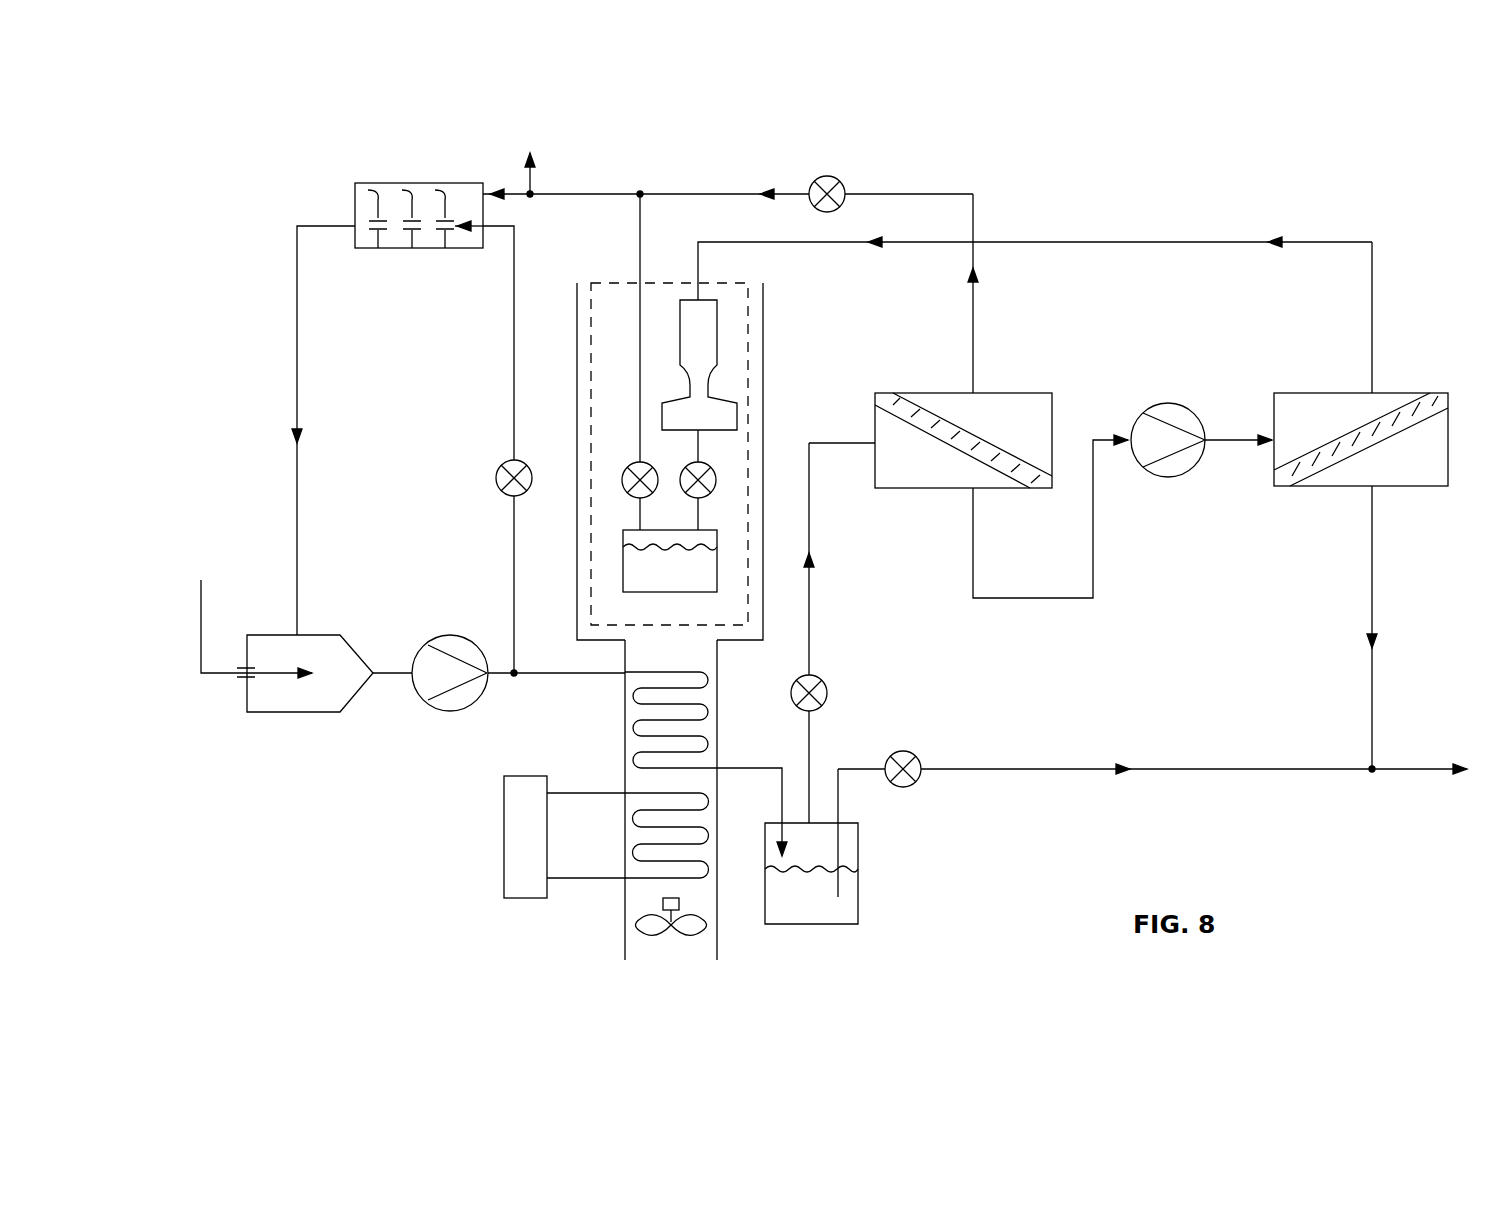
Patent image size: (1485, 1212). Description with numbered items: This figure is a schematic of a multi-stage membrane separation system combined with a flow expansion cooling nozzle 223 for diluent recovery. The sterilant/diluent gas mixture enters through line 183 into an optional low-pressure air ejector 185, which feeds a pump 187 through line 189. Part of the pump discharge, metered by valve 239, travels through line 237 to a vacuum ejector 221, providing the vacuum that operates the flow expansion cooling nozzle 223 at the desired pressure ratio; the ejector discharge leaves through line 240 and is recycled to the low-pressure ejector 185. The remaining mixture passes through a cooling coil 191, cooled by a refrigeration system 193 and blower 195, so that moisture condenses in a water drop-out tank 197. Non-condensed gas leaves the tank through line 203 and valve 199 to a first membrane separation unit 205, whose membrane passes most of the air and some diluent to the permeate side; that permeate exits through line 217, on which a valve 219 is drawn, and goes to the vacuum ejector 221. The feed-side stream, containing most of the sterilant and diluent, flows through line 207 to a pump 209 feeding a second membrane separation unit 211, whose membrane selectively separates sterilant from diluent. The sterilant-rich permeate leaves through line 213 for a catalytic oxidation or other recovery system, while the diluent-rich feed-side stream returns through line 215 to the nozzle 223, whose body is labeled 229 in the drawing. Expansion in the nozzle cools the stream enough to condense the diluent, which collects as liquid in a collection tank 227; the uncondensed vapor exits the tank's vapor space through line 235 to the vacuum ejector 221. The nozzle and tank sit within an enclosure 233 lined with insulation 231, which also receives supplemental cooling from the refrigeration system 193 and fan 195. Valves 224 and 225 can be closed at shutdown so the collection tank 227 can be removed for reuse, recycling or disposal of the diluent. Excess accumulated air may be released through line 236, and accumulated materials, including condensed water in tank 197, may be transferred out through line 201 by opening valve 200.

The line 183 is at (201, 603).
The low-pressure air ejector 185 is at (315, 712).
The pump 187 is at (445, 636).
The line 189 is at (575, 675).
The cooling coil 191 is at (633, 700).
The refrigeration system 193 is at (504, 812).
The blower 195 is at (648, 930).
The water drop-out tank 197 is at (858, 890).
The valve 199 is at (818, 678).
The valve 200 is at (910, 752).
The line 201 is at (1018, 769).
The line 203 is at (809, 507).
The first membrane separation unit 205 is at (1012, 393).
The line 207 is at (1050, 600).
The pump 209 is at (1170, 403).
The second membrane separation unit 211 is at (1410, 393).
The line 213 is at (1372, 578).
The line 215 is at (1103, 242).
The line 217 is at (973, 313).
The valve 219 is at (845, 190).
The vacuum ejector 221 is at (388, 250).
The flow expansion cooling nozzle 223 is at (680, 356).
The valve 224 is at (717, 480).
The valve 225 is at (625, 468).
The collection tank 227 is at (623, 560).
The separator 229 is at (700, 450).
The insulation 231 is at (620, 283).
The enclosure 233 is at (763, 360).
The line 235 is at (615, 194).
The line 236 is at (530, 185).
The line 237 is at (514, 560).
The valve 239 is at (500, 466).
The line 240 is at (297, 343).